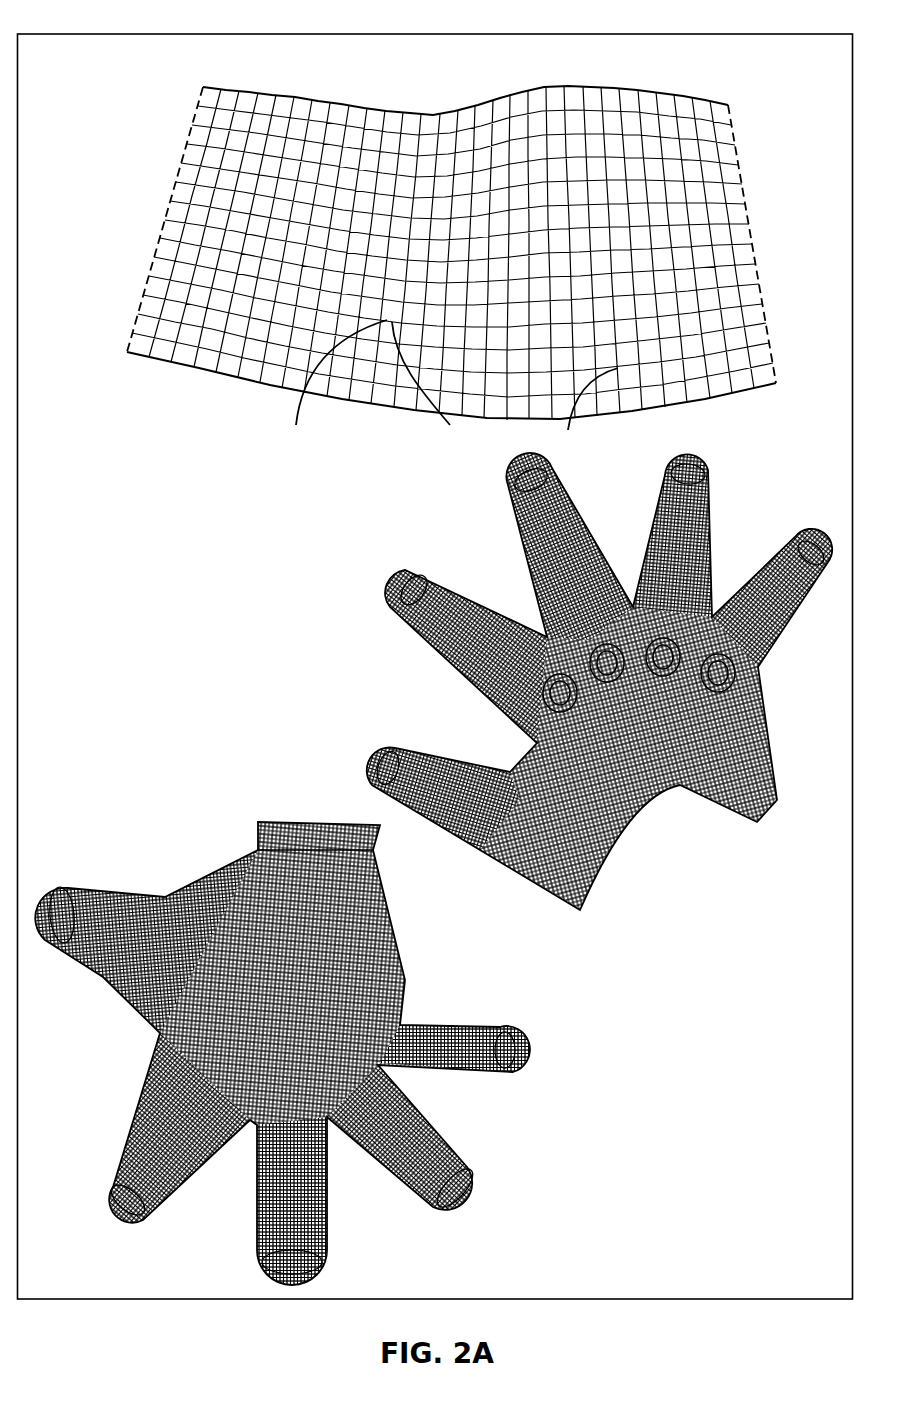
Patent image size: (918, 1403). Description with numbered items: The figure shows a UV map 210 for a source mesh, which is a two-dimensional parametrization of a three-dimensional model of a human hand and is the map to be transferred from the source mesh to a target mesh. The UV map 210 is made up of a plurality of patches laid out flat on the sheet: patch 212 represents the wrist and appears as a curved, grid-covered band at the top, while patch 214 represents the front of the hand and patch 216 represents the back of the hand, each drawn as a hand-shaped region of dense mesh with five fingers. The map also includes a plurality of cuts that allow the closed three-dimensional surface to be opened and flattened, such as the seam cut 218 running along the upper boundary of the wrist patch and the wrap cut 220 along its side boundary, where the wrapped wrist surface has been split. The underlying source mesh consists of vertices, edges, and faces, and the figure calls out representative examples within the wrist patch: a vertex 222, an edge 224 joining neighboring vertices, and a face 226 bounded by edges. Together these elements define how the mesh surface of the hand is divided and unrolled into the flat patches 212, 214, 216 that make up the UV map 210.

The UV map 210 is at (112, 33).
The patch 212 is at (413, 258).
The patch 214 is at (242, 884).
The patch 216 is at (646, 768).
The seam cut 218 is at (430, 113).
The wrap cut 220 is at (136, 318).
The vertex 222 is at (328, 387).
The edge 224 is at (433, 390).
The face 226 is at (580, 416).